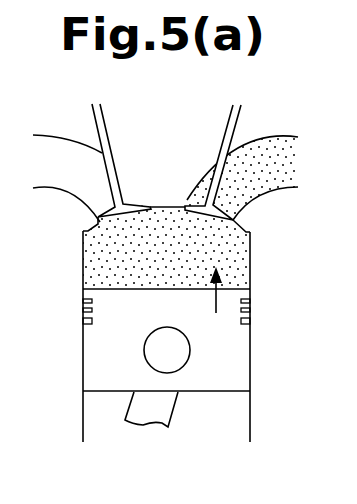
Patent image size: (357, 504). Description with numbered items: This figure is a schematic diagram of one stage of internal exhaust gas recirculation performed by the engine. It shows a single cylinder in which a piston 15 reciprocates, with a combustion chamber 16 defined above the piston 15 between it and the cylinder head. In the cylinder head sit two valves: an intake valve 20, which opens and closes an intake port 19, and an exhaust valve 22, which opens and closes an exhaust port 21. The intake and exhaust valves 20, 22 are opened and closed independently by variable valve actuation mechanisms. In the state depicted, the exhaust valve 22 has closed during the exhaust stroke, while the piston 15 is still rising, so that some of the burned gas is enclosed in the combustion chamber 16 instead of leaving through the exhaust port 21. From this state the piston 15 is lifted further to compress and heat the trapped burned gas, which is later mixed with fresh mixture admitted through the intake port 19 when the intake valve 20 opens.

The piston 15 is at (245, 355).
The combustion chamber 16 is at (243, 262).
The intake port 19 is at (81, 197).
The intake valve 20 is at (118, 178).
The exhaust port 21 is at (262, 193).
The exhaust valve 22 is at (221, 151).